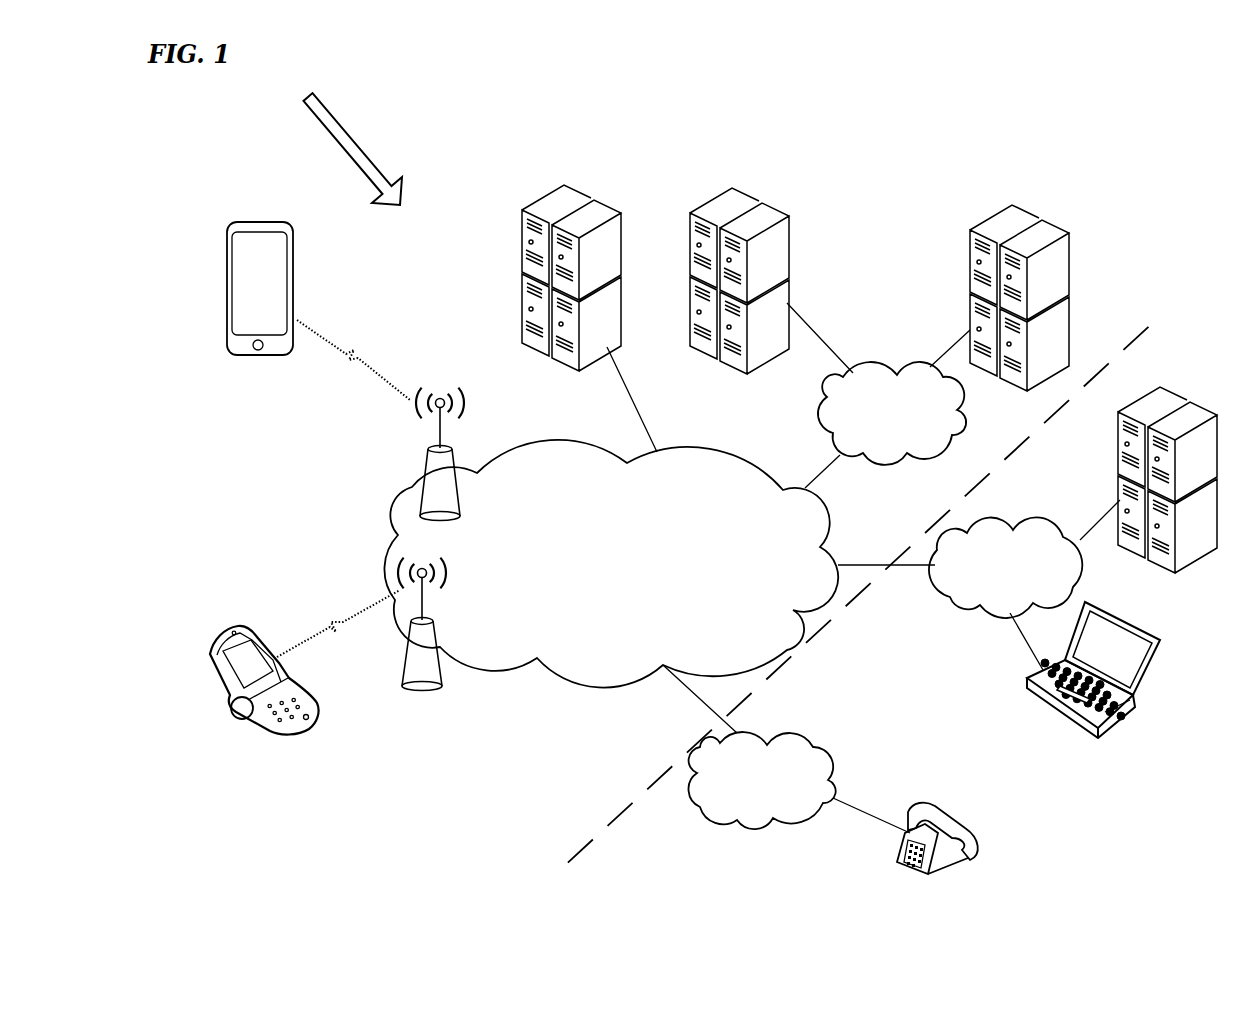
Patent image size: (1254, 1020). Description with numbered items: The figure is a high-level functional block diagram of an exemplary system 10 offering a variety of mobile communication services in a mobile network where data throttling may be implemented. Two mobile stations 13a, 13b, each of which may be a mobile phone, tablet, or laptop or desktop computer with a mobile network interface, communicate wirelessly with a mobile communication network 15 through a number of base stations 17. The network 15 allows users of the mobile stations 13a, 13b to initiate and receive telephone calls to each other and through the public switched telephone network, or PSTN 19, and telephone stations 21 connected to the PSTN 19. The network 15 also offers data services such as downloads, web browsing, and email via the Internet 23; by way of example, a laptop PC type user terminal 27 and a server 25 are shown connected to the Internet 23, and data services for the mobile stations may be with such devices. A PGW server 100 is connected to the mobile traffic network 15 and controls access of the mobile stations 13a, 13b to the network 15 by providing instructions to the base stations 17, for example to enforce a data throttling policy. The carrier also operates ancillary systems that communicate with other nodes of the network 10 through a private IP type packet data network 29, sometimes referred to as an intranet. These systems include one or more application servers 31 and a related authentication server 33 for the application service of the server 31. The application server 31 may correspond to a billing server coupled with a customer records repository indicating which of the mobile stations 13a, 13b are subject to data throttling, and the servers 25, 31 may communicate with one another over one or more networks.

The system 10 is at (342, 140).
The mobile station 13a is at (207, 658).
The mobile station 13b is at (228, 268).
The mobile communication network 15 is at (517, 450).
The base station 17 is at (421, 469).
The public switched telephone network (PSTN) 19 is at (838, 766).
The telephone station 21 is at (895, 869).
The Internet 23 is at (945, 607).
The server 25 is at (1117, 479).
The laptop PC type user terminal 27 is at (1057, 713).
The private IP type packet data network 29 is at (967, 425).
The application server 31 is at (787, 238).
The authentication server 33 is at (1068, 297).
The PGW server 100 is at (590, 205).